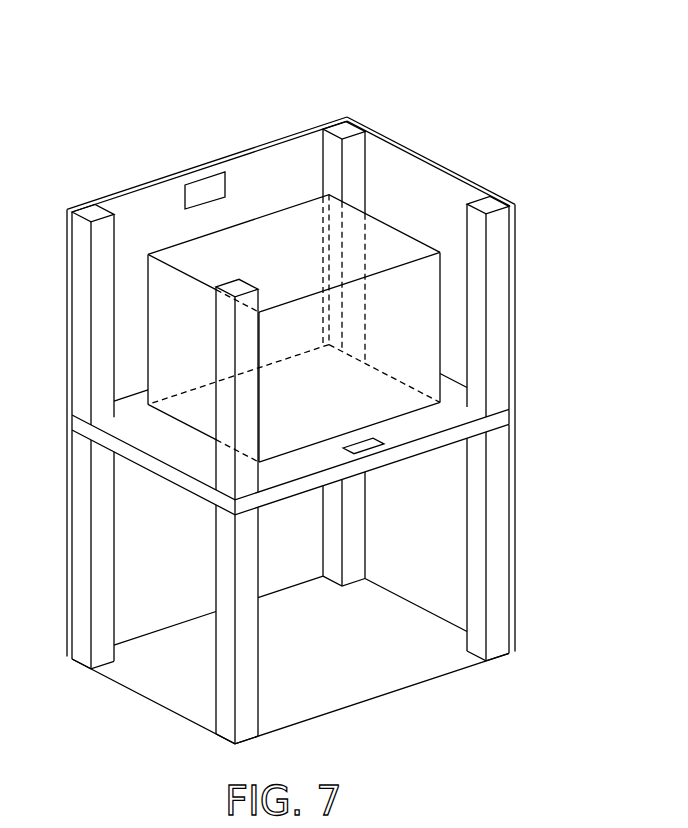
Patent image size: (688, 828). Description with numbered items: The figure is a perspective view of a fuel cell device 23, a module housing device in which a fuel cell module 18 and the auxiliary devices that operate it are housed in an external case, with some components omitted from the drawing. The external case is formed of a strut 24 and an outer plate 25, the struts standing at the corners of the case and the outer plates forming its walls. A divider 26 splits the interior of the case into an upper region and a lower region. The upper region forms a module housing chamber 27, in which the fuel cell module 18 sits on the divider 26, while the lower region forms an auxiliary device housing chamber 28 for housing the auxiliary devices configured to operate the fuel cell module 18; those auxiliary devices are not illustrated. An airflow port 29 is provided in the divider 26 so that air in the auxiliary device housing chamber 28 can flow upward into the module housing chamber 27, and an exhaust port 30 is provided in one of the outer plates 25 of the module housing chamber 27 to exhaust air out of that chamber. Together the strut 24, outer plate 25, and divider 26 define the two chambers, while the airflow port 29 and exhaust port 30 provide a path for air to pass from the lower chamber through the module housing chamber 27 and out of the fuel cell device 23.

The fuel cell module 18 is at (390, 240).
The fuel cell device 23 is at (244, 79).
The strut 24 is at (96, 212).
The outer plate 25 is at (241, 348).
The divider 26 is at (510, 412).
The module housing chamber 27 is at (402, 183).
The auxiliary device housing chamber 28 is at (148, 552).
The airflow port 29 is at (376, 440).
The exhaust port 30 is at (199, 187).